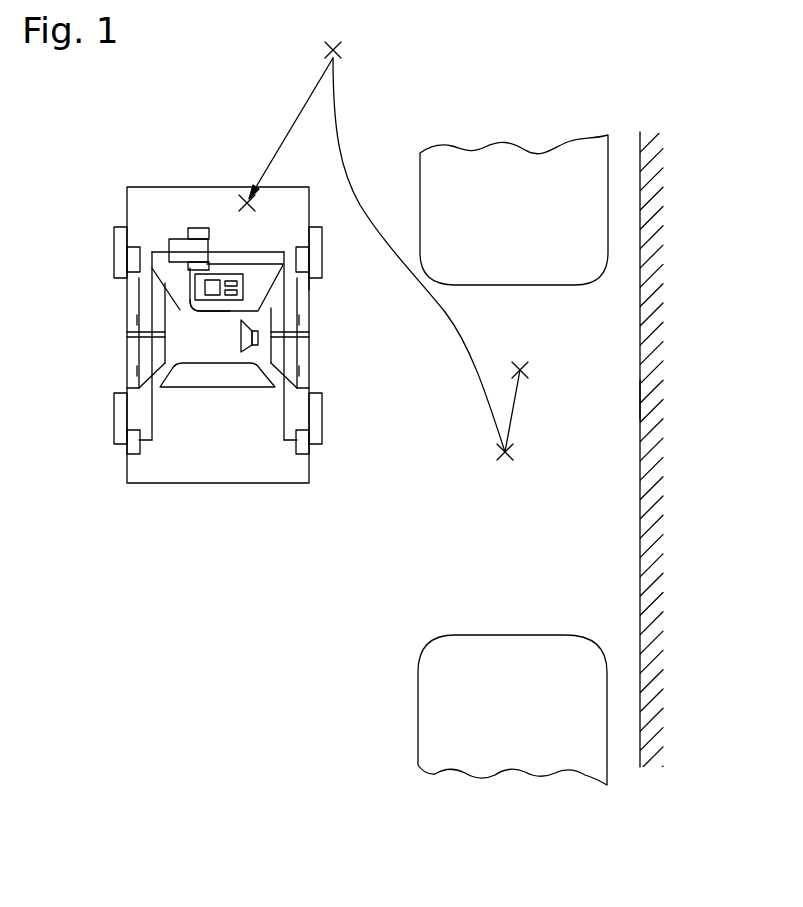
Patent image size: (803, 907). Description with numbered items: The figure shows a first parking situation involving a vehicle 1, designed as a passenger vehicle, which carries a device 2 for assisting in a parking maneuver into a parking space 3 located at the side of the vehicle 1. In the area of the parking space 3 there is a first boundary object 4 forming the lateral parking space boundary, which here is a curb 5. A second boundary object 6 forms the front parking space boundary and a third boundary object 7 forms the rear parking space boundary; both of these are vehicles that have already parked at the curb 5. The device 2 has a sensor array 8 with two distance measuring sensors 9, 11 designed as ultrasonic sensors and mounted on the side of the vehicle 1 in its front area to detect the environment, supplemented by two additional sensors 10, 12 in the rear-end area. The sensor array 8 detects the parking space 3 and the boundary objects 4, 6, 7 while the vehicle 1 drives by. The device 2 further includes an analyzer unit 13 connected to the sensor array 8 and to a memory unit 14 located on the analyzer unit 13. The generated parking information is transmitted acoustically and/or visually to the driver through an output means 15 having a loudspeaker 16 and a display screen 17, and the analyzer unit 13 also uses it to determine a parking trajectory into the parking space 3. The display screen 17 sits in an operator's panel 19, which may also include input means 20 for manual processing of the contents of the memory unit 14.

The vehicle 1 is at (152, 473).
The device for assisting in a parking maneuver 2 is at (157, 290).
The parking space 3 is at (492, 560).
The first boundary object 4 is at (700, 398).
The curb 5 is at (652, 503).
The second boundary object 6 is at (552, 163).
The third boundary object 7 is at (553, 757).
The sensor array 8 is at (345, 285).
The distance measuring sensor 9 is at (133, 258).
The additional sensor 10 is at (133, 447).
The distance measuring sensor 11 is at (321, 264).
The additional sensor 12 is at (303, 447).
The analyzer unit 13 is at (178, 248).
The memory unit 14 is at (198, 235).
The output means 15 is at (228, 364).
The loudspeaker 16 is at (258, 340).
The display screen 17 is at (212, 286).
The operator's panel 19 is at (181, 300).
The input means 20 is at (234, 282).